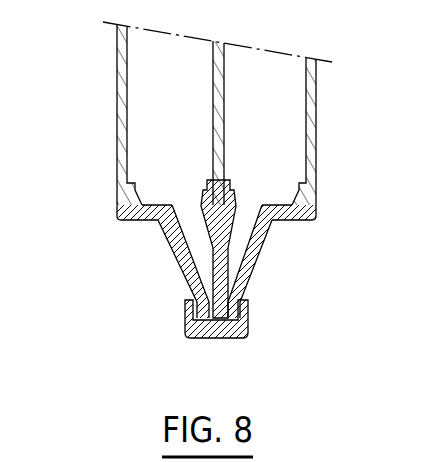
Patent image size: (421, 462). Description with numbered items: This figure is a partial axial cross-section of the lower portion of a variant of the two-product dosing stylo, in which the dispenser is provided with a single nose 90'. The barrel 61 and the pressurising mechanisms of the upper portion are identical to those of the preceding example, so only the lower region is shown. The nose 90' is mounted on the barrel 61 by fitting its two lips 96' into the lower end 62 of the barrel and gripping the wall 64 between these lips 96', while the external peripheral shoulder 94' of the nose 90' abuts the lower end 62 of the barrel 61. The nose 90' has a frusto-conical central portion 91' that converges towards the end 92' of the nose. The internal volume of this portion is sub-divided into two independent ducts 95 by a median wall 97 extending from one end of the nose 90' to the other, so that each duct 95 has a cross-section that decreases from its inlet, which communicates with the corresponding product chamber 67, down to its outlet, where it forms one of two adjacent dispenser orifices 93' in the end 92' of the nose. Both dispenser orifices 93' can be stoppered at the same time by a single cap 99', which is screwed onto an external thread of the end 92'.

The barrel 61 is at (318, 111).
The lower end of the barrel 62 is at (312, 191).
The wall 64 is at (213, 100).
The product chamber 67 is at (150, 63).
The nose 90' is at (315, 298).
The frusto-conical central portion 91' is at (132, 261).
The end of the nose 92' is at (252, 327).
The dispenser orifice 93' is at (237, 355).
The external peripheral shoulder 94' is at (304, 261).
The duct 95 is at (199, 247).
The lip 96' is at (220, 157).
The median wall 97 is at (217, 270).
The cap 99' is at (153, 346).